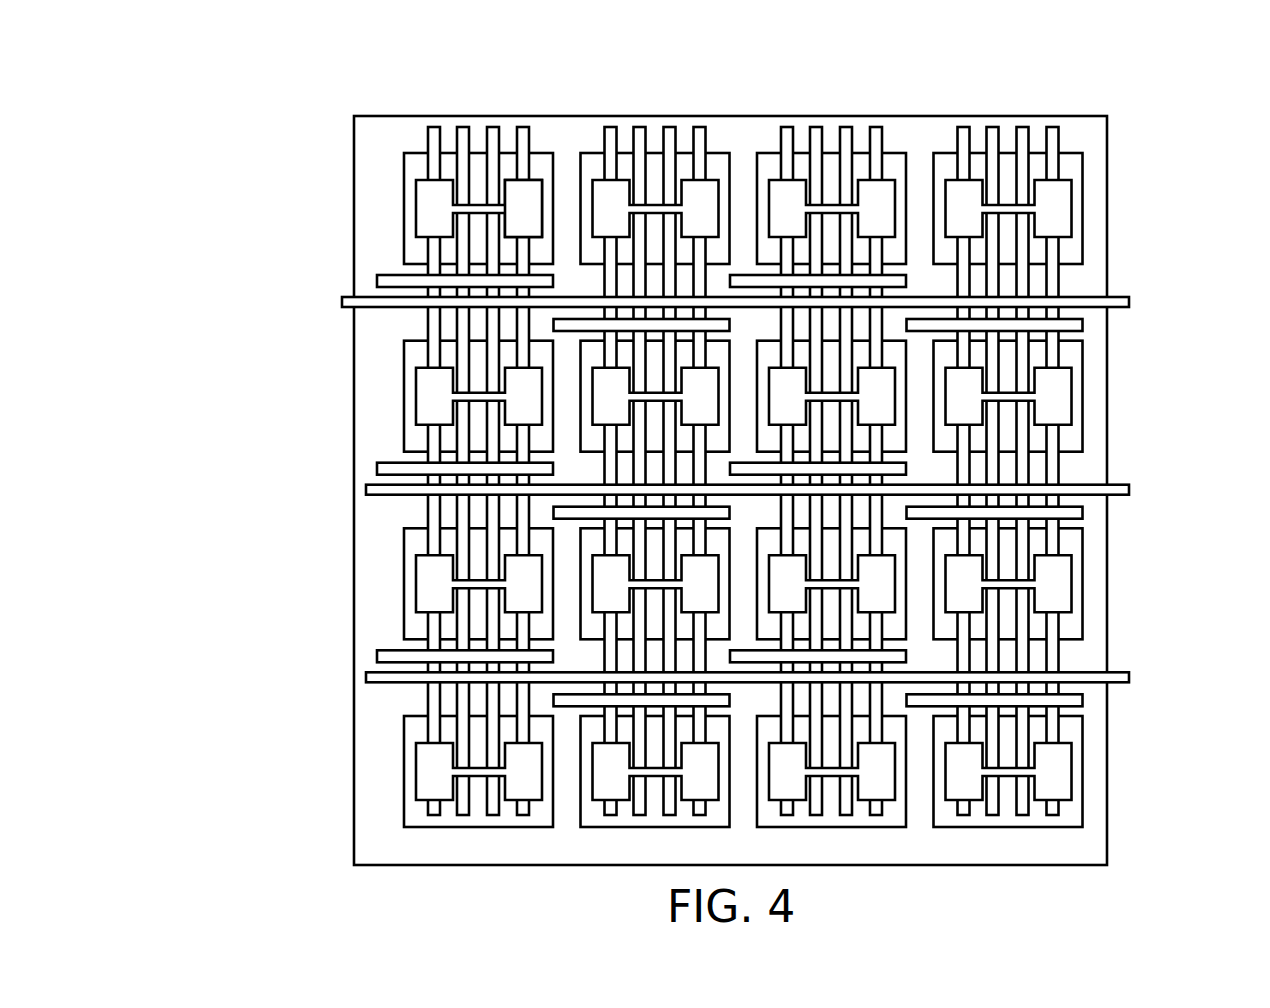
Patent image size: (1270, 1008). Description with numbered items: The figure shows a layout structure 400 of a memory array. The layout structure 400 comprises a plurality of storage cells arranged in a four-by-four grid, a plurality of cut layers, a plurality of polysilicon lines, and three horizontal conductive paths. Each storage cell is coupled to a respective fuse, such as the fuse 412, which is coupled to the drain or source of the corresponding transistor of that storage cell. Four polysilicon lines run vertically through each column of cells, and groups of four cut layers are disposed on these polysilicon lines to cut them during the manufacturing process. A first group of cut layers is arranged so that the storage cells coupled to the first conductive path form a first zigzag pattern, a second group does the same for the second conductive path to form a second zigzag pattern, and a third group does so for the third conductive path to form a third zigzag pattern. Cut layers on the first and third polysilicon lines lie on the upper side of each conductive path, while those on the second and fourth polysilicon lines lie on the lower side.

The layout structure 400 is at (258, 48).
The fuse 412 is at (535, 197).